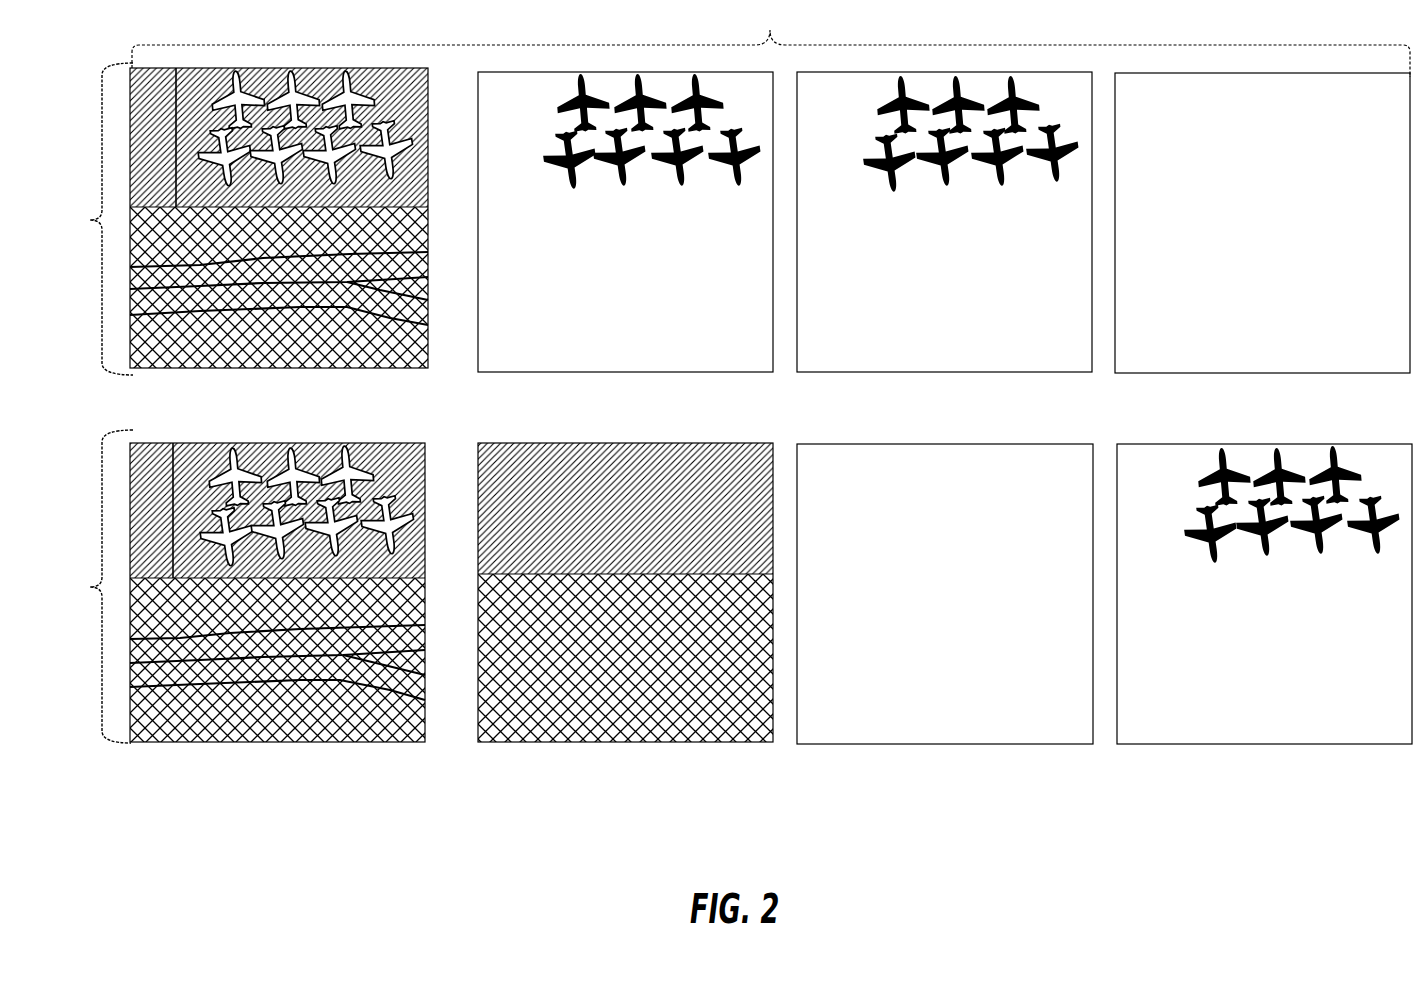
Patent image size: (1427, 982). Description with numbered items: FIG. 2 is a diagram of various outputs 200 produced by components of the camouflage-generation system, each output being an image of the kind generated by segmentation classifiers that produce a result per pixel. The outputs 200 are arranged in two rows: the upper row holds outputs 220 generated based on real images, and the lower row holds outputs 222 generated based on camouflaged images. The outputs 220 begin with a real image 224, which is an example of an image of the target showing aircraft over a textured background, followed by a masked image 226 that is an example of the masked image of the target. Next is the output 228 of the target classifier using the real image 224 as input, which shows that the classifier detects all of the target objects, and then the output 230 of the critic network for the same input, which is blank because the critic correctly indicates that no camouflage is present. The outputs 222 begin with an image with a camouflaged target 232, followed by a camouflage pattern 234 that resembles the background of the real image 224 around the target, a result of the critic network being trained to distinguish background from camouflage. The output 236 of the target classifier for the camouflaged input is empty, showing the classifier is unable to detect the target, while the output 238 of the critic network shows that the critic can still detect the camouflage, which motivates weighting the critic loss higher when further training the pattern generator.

The outputs 200 is at (771, 40).
The outputs generated based on real images 220 is at (88, 219).
The outputs generated based on camouflaged images 222 is at (88, 586).
The real image 224 is at (377, 369).
The masked image 226 is at (704, 373).
The output of the target classifier based on the real image 228 is at (932, 373).
The output of the critic network based on the real image 230 is at (1242, 374).
The image with a camouflaged target 232 is at (297, 743).
The camouflage pattern 234 is at (643, 743).
The output of the target classifier using the image with the camouflaged target 236 is at (935, 745).
The output of the critic network using the image with the camouflaged target 238 is at (1283, 745).